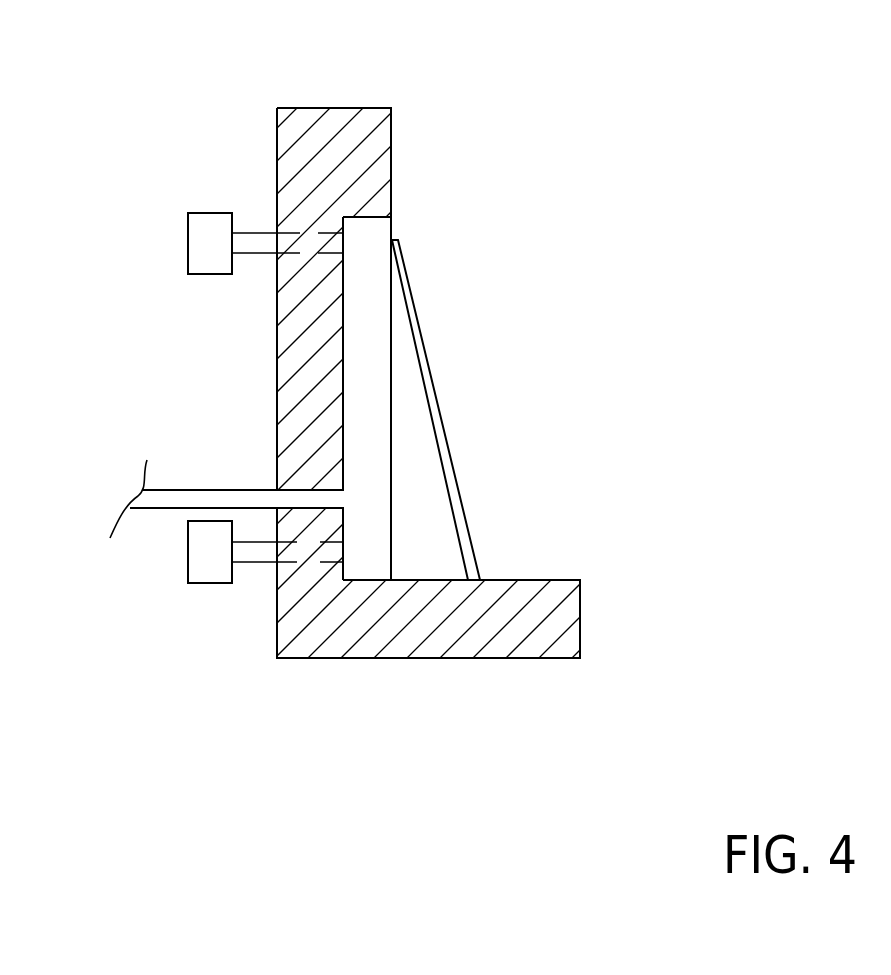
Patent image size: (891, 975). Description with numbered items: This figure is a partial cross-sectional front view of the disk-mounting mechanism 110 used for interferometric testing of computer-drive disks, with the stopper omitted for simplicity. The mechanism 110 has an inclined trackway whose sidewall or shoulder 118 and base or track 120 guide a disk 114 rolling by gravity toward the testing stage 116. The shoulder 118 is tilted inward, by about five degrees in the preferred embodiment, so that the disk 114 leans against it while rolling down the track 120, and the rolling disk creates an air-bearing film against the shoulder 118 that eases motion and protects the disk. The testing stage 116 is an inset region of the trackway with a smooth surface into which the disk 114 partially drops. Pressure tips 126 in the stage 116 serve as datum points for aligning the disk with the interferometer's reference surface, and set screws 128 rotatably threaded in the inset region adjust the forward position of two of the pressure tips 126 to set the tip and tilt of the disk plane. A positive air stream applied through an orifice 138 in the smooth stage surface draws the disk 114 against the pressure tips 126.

The disk-mounting mechanism 110 is at (532, 236).
The computer-drive disk 114 is at (453, 490).
The testing stage 116 is at (363, 344).
The shoulder 118 is at (391, 150).
The track 120 is at (530, 578).
The pressure tips 126 is at (343, 244).
The set screws 128 is at (211, 243).
The orifice 138 is at (350, 508).